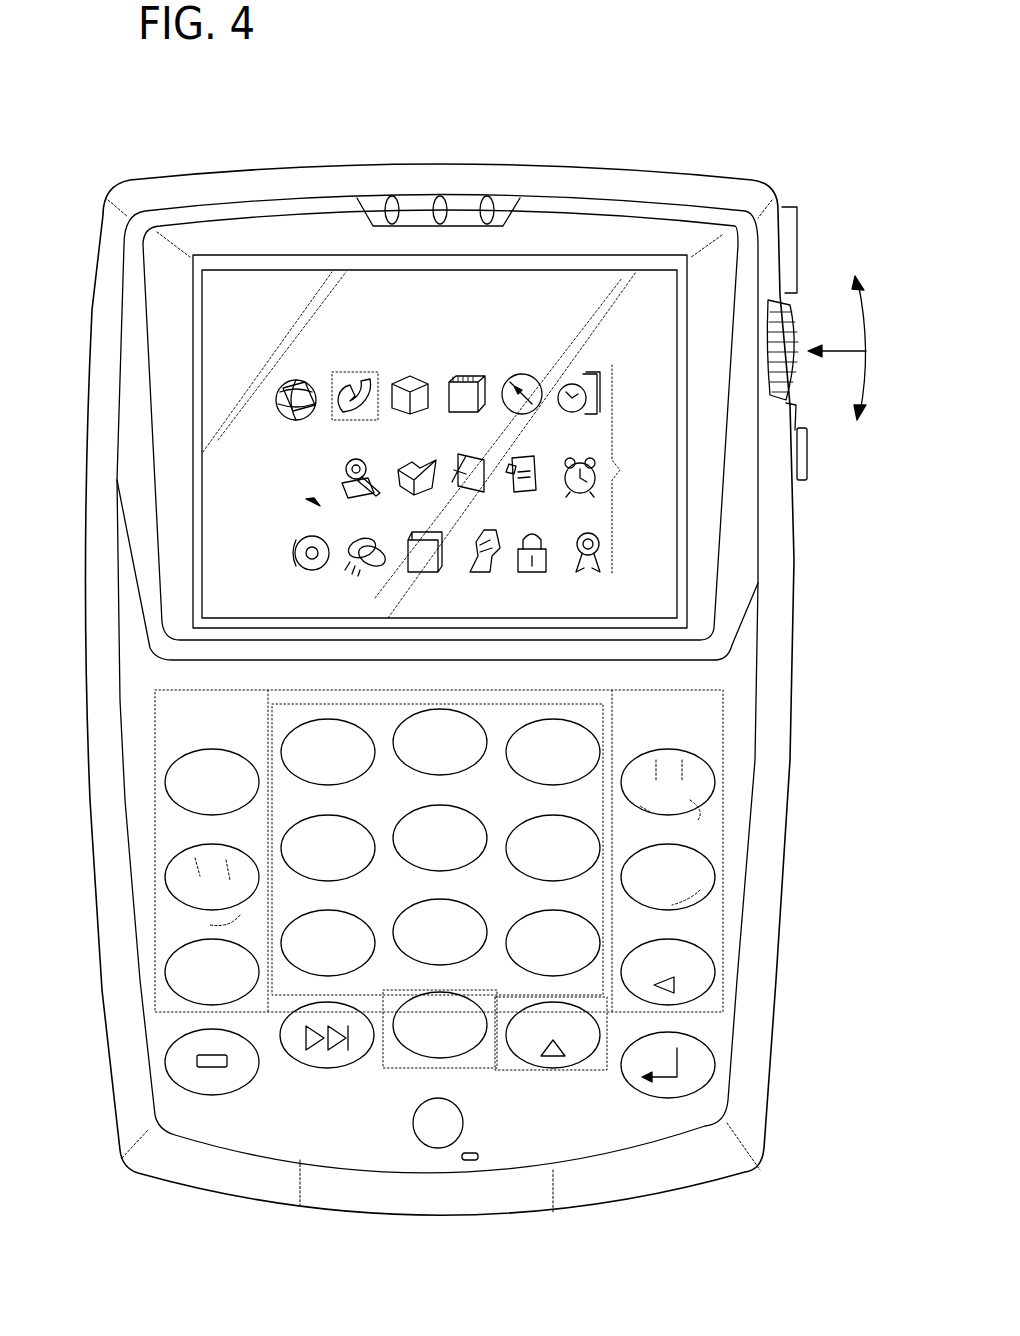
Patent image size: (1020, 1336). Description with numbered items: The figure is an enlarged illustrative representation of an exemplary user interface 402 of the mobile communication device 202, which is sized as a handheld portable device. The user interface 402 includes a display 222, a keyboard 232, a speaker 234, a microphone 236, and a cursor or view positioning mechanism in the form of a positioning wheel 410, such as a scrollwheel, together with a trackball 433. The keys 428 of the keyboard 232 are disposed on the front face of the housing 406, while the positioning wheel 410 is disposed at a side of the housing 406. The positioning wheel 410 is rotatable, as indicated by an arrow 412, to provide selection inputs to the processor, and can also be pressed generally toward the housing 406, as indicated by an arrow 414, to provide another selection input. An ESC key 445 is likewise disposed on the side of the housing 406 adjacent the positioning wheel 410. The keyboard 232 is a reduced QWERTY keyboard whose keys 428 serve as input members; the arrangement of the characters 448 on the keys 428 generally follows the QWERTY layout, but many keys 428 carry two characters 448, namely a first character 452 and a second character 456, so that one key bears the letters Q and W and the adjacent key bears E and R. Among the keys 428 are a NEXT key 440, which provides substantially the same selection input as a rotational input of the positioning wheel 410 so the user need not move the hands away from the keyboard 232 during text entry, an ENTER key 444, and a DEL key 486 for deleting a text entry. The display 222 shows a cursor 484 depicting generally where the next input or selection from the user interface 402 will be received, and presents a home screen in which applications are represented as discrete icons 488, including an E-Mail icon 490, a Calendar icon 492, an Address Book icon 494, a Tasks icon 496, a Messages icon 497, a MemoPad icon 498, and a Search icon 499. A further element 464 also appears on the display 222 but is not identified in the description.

The mobile communication device 202 is at (253, 162).
The speaker 234 is at (428, 197).
The housing 406 is at (628, 168).
The arrow 412 is at (868, 268).
The arrow 414 is at (842, 347).
The positioning wheel 410 is at (797, 376).
The display 222 is at (660, 303).
The ESC key 445 is at (808, 462).
The Electronic Mail icon 490 is at (298, 380).
The cursor 484 is at (340, 372).
The Address Book icon 494 is at (404, 372).
The Calendar icon 492 is at (458, 372).
The cursor 464 is at (503, 368).
The Messages icon 497 is at (286, 462).
The Search icon 499 is at (360, 466).
The Tasks icon 496 is at (456, 458).
The MemoPad icon 498 is at (520, 458).
The icons 488 is at (622, 470).
The user interface 402 is at (804, 701).
The keyboard 232 is at (711, 857).
The keys 428 is at (186, 752).
The first character 452 is at (654, 775).
The second character 456 is at (688, 772).
The characters 448 is at (690, 800).
The DEL key 486 is at (706, 968).
The ENTER key 444 is at (706, 1045).
The trackball 433 is at (462, 1098).
The NEXT key 440 is at (328, 1068).
The microphone 236 is at (470, 1166).